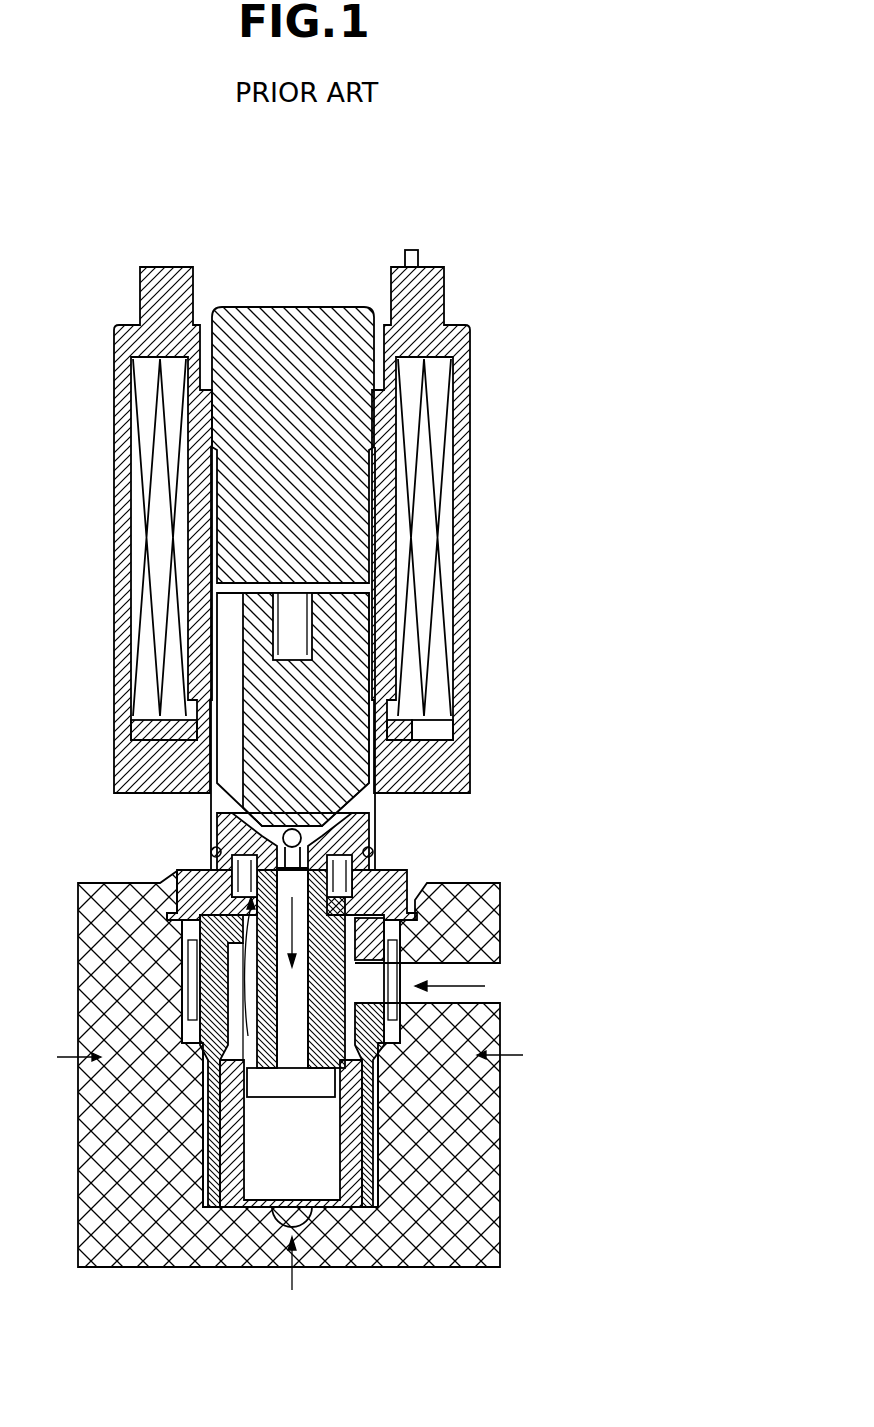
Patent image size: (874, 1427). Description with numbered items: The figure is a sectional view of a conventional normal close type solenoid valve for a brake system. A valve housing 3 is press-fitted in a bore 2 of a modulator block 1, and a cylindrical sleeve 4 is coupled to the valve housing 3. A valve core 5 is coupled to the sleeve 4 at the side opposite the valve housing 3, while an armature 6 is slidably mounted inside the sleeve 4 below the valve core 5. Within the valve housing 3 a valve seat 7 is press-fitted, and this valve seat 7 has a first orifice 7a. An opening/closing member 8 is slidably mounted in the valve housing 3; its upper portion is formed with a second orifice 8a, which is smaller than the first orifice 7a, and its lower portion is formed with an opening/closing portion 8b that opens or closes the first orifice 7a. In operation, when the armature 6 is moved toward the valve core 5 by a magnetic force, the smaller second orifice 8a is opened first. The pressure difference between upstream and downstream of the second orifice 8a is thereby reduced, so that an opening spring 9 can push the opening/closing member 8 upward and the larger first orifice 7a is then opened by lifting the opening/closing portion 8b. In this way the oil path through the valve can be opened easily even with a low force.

The modulator block 1 is at (467, 890).
The bore 2 is at (397, 1012).
The valve housing 3 is at (388, 868).
The cylindrical sleeve 4 is at (212, 818).
The valve core 5 is at (292, 322).
The armature 6 is at (347, 663).
The valve seat 7 is at (207, 1137).
The first orifice 7a is at (240, 1045).
The opening/closing member 8 is at (250, 980).
The second orifice 8a is at (212, 863).
The opening/closing portion 8b is at (333, 1083).
The opening spring 9 is at (200, 917).